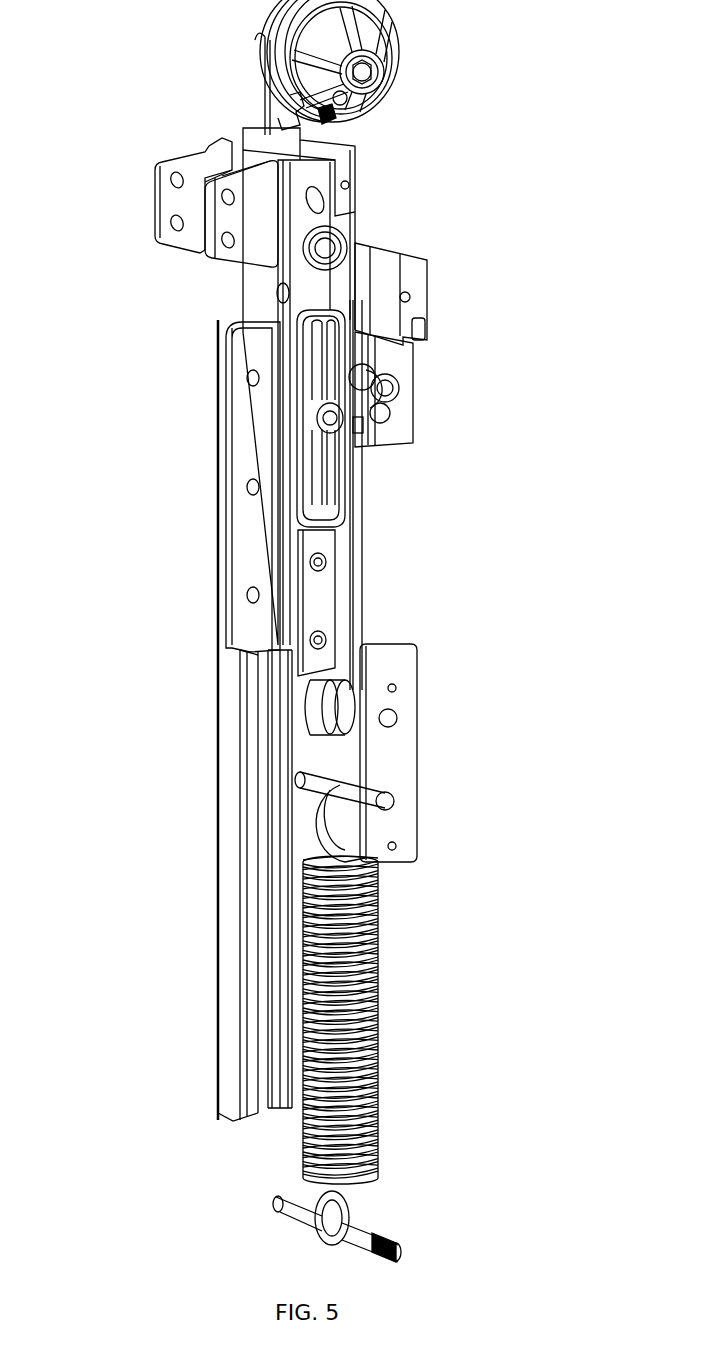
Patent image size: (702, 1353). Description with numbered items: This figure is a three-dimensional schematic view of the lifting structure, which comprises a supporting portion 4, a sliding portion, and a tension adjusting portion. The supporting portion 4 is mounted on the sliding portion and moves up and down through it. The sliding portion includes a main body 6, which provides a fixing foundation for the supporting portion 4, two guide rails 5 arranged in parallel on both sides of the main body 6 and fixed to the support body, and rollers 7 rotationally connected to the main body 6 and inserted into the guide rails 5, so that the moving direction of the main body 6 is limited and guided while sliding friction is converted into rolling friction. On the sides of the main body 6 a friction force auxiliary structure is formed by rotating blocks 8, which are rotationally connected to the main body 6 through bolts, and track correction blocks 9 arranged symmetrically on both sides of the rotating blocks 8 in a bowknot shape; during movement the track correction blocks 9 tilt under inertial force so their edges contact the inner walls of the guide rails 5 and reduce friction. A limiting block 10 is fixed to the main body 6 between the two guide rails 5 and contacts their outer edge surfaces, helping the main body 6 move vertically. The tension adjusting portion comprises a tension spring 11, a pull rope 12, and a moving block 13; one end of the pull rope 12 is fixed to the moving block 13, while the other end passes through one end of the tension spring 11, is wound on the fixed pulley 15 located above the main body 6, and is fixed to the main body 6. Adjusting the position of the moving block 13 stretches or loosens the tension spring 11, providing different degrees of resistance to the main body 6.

The supporting portion 4 is at (242, 218).
The guide rail 5 is at (232, 976).
The main body 6 is at (347, 340).
The roller 7 is at (350, 246).
The rotating block 8 is at (315, 432).
The track correction block 9 is at (300, 355).
The limiting block 10 is at (245, 503).
The tension spring 11 is at (305, 953).
The pull rope 12 is at (360, 508).
The moving block 13 is at (403, 408).
The fixed pulley 15 is at (375, 48).